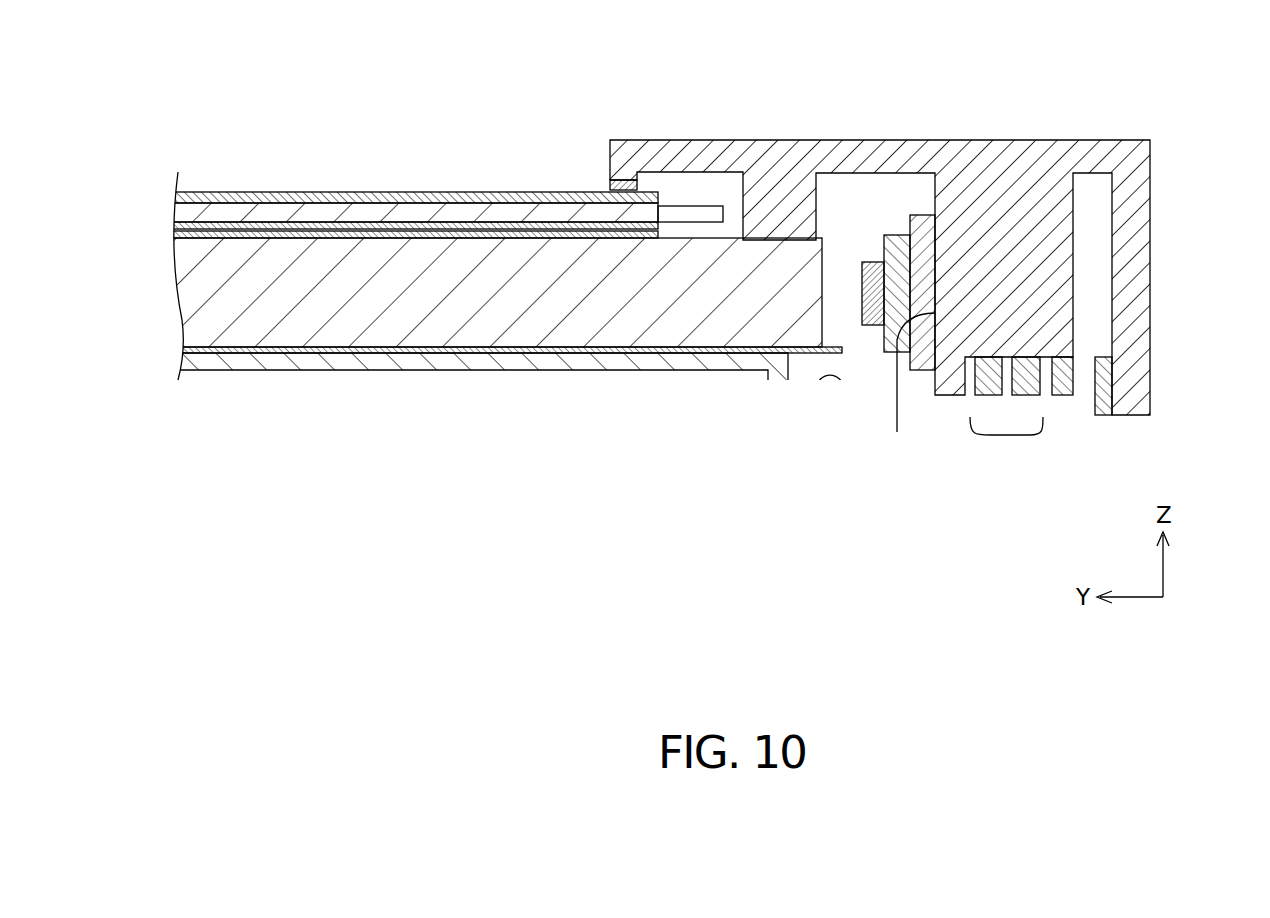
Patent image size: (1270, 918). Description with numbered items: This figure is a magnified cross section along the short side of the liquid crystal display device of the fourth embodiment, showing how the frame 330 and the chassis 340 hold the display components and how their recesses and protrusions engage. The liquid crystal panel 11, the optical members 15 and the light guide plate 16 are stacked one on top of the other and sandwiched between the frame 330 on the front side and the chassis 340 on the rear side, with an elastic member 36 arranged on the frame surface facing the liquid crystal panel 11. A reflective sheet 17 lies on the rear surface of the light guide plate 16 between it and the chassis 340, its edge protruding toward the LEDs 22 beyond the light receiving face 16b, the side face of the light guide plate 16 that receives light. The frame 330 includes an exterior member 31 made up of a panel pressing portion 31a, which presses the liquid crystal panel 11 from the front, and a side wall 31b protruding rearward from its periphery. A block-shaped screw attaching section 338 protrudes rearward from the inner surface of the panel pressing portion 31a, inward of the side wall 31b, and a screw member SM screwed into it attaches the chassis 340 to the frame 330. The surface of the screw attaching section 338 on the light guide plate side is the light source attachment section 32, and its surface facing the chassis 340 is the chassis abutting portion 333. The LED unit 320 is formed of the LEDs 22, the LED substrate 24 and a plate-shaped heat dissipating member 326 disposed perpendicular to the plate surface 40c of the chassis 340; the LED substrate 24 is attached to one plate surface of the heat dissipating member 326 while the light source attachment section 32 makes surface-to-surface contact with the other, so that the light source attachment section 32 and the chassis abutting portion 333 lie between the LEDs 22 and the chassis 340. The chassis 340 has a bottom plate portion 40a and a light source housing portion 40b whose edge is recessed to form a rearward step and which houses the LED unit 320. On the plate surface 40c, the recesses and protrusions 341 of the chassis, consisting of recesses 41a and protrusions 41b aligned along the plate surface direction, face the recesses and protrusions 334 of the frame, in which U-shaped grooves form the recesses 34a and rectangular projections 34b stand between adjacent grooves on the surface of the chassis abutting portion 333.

The liquid crystal panel 11 is at (290, 192).
The optical members 15 is at (513, 227).
The light guide plate 16 is at (550, 297).
The light receiving face 16b is at (825, 303).
The reflective sheet 17 is at (470, 333).
The LED 22 is at (868, 260).
The LED substrate 24 is at (897, 257).
The exterior member 31 is at (1170, 62).
The panel pressing portion 31a is at (1050, 162).
The side wall 31b is at (1132, 233).
The light source attachment section 32 is at (911, 384).
The recess 34a is at (1010, 352).
The protrusion 34b is at (1030, 378).
The elastic member 36 is at (623, 180).
The bottom plate portion 40a is at (245, 362).
The light source housing portion 40b is at (803, 404).
The plate surface 40c is at (822, 378).
The recess 41a is at (985, 380).
The protrusion 41b is at (992, 385).
The LED unit 320 is at (895, 205).
The heat dissipating member 326 is at (922, 237).
The frame 330 is at (777, 173).
The chassis abutting portion 333 is at (1058, 398).
The recesses and protrusions of frame 334 is at (1205, 302).
The screw attaching section 338 is at (1027, 297).
The chassis 340 is at (348, 371).
The recesses and protrusions of chassis 341 is at (976, 442).
The screw member SM is at (1017, 437).